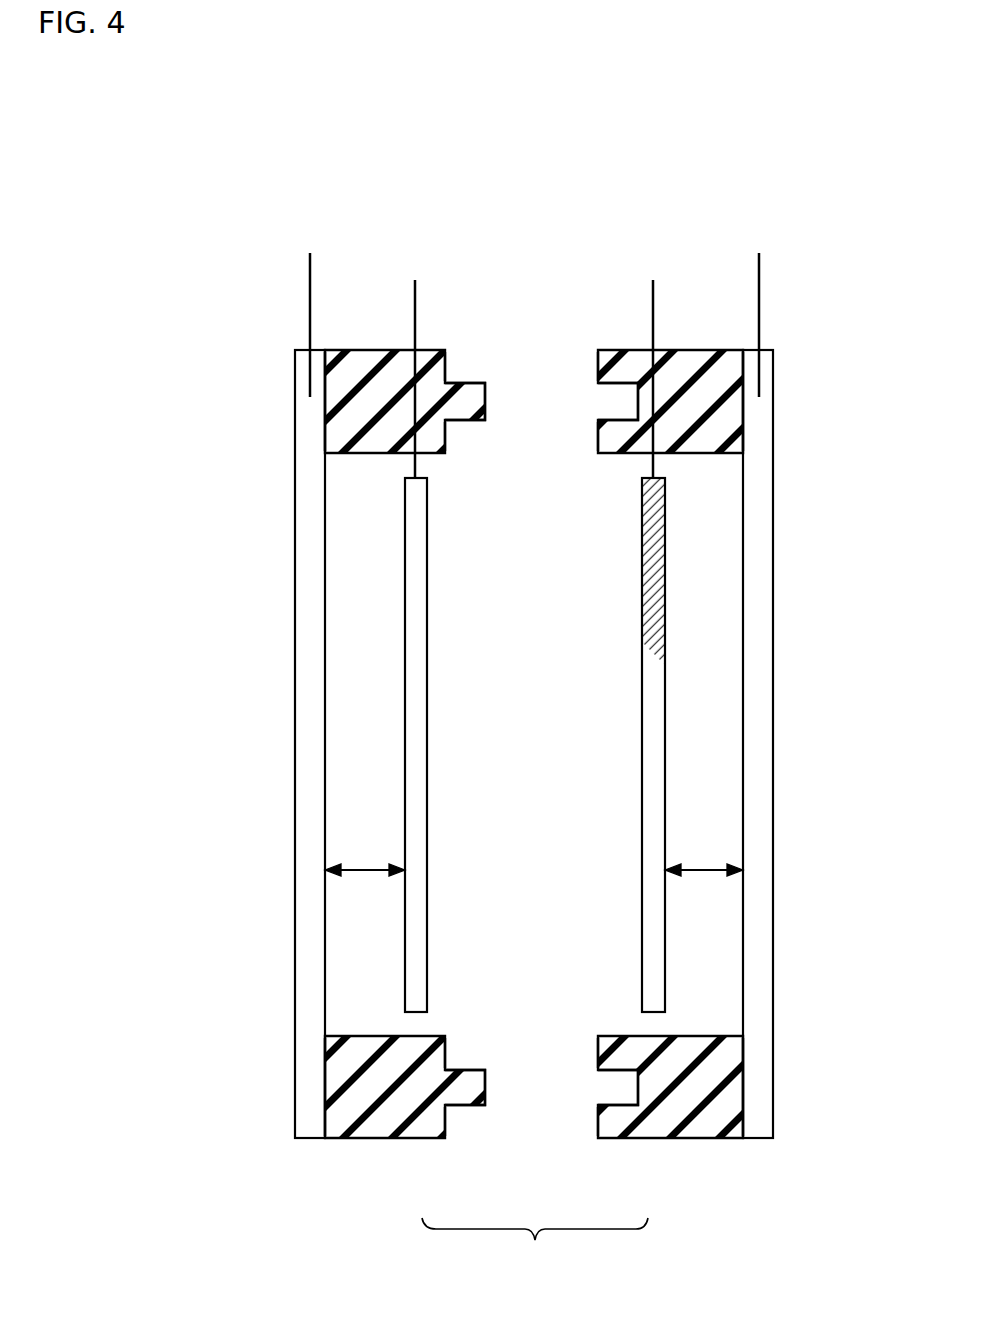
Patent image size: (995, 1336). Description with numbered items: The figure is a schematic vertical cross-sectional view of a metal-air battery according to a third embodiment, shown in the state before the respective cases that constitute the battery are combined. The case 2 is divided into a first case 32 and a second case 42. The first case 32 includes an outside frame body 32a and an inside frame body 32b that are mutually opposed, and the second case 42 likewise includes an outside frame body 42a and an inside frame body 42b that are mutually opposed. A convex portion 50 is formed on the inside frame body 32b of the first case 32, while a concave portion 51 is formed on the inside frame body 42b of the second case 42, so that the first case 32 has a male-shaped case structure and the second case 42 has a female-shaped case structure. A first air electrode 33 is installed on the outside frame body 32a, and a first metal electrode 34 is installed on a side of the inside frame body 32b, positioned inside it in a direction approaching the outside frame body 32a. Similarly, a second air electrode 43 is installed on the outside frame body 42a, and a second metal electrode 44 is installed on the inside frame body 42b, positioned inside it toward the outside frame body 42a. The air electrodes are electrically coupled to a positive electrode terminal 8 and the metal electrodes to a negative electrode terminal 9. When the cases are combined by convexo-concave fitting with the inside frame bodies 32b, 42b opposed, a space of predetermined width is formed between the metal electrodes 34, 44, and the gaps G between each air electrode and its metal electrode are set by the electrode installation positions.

The case 2 is at (535, 1243).
The positive electrode terminal 8 is at (310, 283).
The negative electrode terminal 9 is at (415, 293).
The first case 32 is at (415, 1130).
The outside frame body 32a is at (325, 443).
The inside frame body 32b is at (445, 441).
The first air electrode 33 is at (300, 585).
The first metal electrode 34 is at (427, 765).
The second case 42 is at (653, 1127).
The outside frame body 42a is at (743, 443).
The inside frame body 42b is at (598, 443).
The second air electrode 43 is at (768, 690).
The second metal electrode 44 is at (648, 718).
The convex portion 50 is at (487, 397).
The concave portion 51 is at (638, 402).
The gap G is at (365, 870).